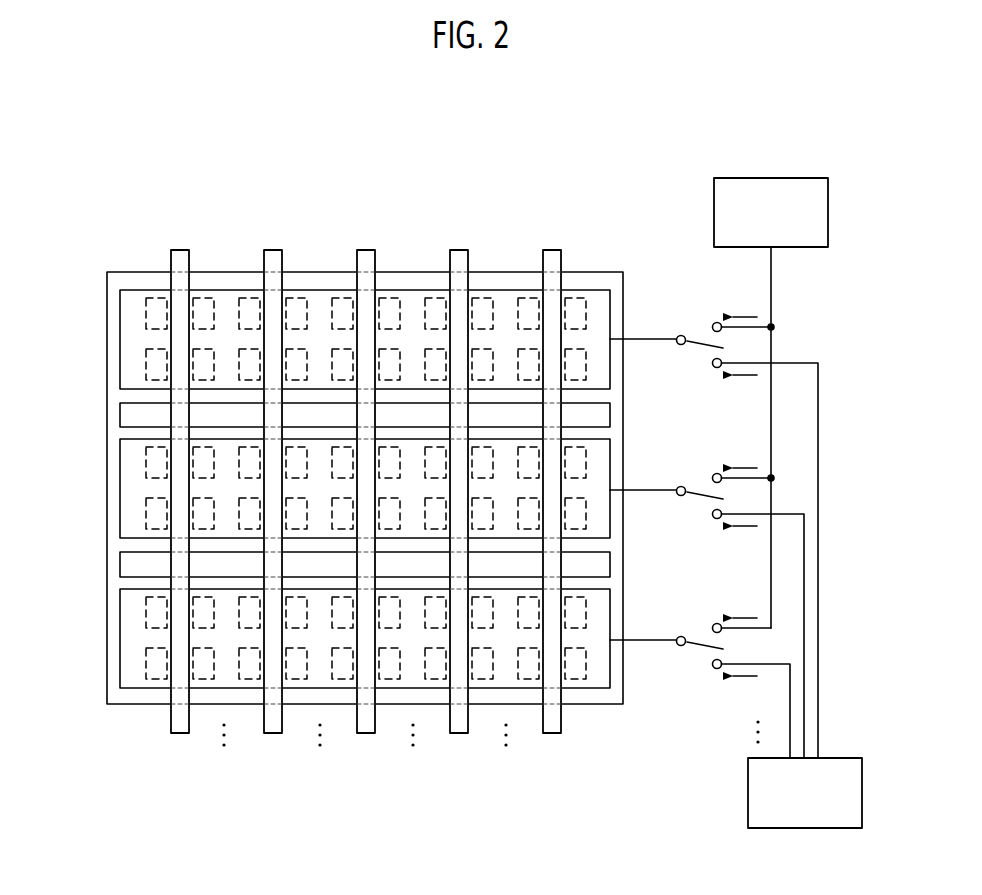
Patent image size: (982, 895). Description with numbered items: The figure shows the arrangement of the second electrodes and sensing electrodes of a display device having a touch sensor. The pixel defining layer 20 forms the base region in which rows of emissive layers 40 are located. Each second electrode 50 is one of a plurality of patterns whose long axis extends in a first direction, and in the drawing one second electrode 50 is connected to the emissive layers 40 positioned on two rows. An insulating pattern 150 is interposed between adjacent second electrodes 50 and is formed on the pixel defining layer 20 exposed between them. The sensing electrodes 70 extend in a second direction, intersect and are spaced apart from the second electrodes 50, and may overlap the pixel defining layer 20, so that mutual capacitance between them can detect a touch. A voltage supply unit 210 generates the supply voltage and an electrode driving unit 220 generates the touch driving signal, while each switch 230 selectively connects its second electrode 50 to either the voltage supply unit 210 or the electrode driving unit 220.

The pixel defining layer 20 is at (623, 279).
The emissive layer 40 is at (157, 297).
The second electrode 50 is at (120, 341).
The sensing electrode 70 is at (179, 250).
The insulating pattern 150 is at (120, 414).
The voltage supply unit 210 is at (771, 178).
The electrode driving unit 220 is at (803, 829).
The switch 230 is at (699, 348).